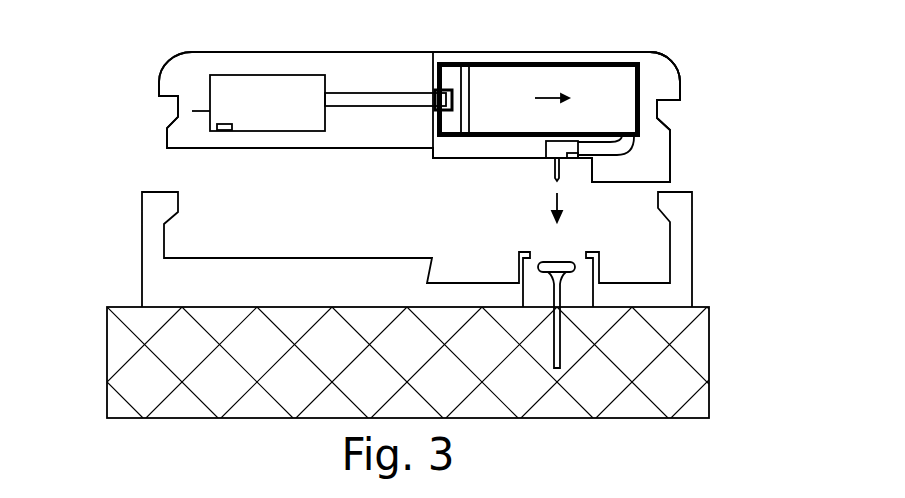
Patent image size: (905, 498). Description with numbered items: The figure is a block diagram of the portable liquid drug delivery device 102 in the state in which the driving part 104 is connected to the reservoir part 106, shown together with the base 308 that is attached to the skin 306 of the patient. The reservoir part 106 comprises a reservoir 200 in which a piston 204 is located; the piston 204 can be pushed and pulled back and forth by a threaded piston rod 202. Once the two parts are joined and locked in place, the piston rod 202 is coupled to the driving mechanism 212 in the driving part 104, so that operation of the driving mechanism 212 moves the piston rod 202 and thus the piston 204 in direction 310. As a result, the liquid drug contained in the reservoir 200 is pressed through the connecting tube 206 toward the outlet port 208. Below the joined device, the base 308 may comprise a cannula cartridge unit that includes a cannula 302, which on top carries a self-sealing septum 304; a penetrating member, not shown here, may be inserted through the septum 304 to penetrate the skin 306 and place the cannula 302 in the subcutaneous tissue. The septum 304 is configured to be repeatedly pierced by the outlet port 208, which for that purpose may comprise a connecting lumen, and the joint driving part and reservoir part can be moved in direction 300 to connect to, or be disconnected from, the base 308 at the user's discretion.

The portable liquid drug delivery device 102 is at (676, 40).
The driving part 104 is at (260, 52).
The reservoir part 106 is at (679, 68).
The reservoir 200 is at (583, 82).
The piston rod 202 is at (363, 93).
The piston 204 is at (470, 90).
The connecting tube 206 is at (634, 143).
The outlet port 208 is at (560, 175).
The driving mechanism 212 is at (258, 103).
The direction 300 is at (551, 209).
The cannula 302 is at (556, 370).
The septum 304 is at (540, 264).
The skin 306 is at (712, 380).
The base 308 is at (680, 205).
The direction 310 is at (548, 110).